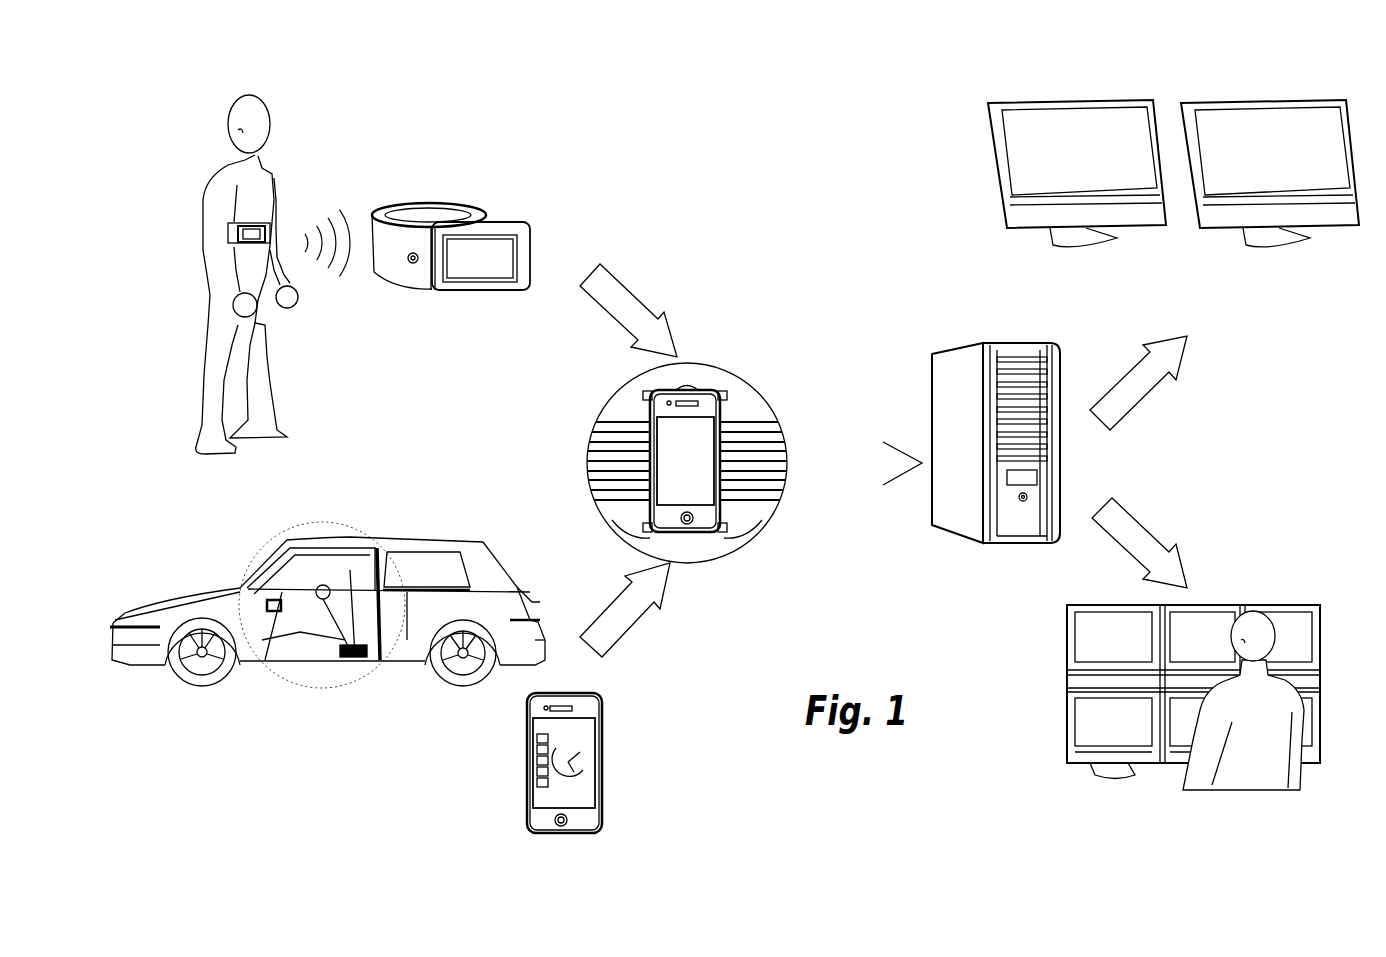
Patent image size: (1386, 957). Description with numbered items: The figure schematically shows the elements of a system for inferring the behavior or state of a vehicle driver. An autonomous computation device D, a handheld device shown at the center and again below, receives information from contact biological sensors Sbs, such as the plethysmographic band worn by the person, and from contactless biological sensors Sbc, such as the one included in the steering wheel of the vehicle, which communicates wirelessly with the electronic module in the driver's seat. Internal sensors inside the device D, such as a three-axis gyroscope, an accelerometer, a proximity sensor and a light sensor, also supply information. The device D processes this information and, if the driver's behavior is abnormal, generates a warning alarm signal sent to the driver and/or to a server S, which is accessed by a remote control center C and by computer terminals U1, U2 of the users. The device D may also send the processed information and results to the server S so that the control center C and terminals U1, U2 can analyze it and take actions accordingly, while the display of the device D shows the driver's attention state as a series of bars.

The contact biological sensors Sbs is at (451, 218).
The contactless biological sensors Sbc is at (327, 591).
The autonomous computation device D is at (733, 404).
The server S is at (996, 463).
The computer terminal U1 is at (1077, 200).
The computer terminal U2 is at (1270, 200).
The remote control center C is at (1193, 712).